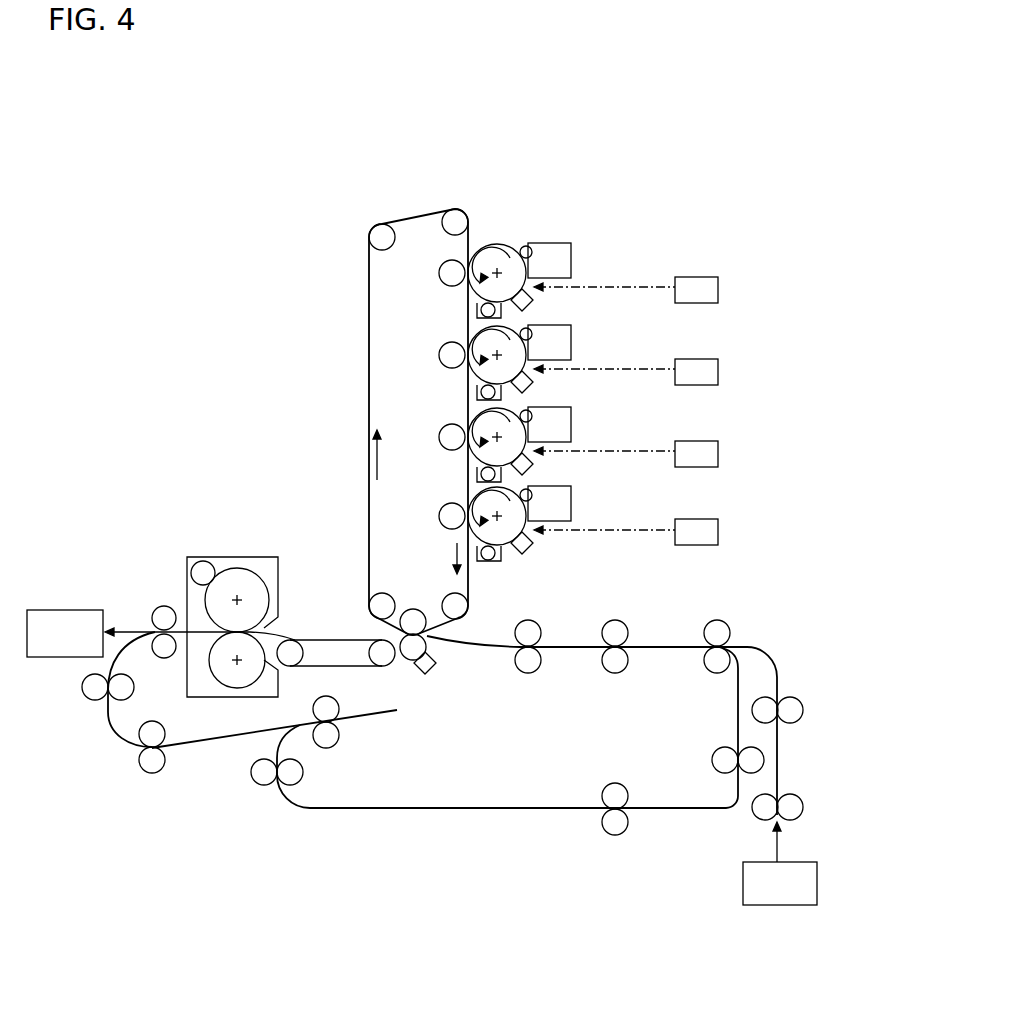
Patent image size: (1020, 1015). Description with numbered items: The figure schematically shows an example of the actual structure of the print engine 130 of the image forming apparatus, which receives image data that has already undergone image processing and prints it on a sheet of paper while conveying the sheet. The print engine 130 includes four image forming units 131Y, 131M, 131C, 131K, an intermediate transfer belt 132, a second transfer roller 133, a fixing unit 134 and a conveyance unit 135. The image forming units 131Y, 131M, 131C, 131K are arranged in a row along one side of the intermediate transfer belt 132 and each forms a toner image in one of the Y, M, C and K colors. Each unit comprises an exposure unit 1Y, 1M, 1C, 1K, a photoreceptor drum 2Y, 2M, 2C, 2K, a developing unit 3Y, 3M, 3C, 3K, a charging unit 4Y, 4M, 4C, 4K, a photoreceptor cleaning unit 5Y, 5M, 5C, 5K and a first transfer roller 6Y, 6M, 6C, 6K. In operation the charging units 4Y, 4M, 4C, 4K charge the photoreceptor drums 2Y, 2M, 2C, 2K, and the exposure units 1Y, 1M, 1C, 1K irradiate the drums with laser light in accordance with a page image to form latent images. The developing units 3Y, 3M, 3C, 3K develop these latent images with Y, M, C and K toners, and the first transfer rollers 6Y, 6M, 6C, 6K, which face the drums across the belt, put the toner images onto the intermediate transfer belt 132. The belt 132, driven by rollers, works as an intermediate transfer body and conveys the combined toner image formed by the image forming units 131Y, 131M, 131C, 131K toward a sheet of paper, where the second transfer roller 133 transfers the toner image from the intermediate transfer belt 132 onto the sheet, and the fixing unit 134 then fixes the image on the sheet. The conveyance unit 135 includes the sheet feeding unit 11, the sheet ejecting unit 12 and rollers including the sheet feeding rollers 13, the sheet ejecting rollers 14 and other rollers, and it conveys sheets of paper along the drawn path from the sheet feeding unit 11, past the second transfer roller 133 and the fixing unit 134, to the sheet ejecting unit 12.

The print engine 130 is at (660, 87).
The image forming unit 131Y is at (743, 229).
The image forming unit 131M is at (741, 325).
The image forming unit 131C is at (741, 412).
The image forming unit 131K is at (749, 491).
The exposure unit 1Y is at (692, 278).
The exposure unit 1M is at (688, 358).
The exposure unit 1C is at (688, 440).
The exposure unit 1K is at (688, 520).
The photoreceptor drum 2Y is at (492, 243).
The photoreceptor drum 2M is at (478, 333).
The photoreceptor drum 2C is at (477, 413).
The photoreceptor drum 2K is at (477, 490).
The developing unit 3Y is at (537, 244).
The developing unit 3M is at (572, 353).
The developing unit 3C is at (571, 430).
The developing unit 3K is at (571, 510).
The charging unit 4Y is at (535, 305).
The charging unit 4M is at (535, 385).
The charging unit 4C is at (535, 467).
The charging unit 4K is at (535, 547).
The photoreceptor cleaning unit 5Y is at (502, 317).
The photoreceptor cleaning unit 5M is at (501, 399).
The photoreceptor cleaning unit 5C is at (501, 480).
The photoreceptor cleaning unit 5K is at (501, 560).
The first transfer roller 6Y is at (456, 266).
The first transfer roller 6M is at (442, 352).
The first transfer roller 6C is at (443, 428).
The first transfer roller 6K is at (443, 510).
The intermediate transfer belt 132 is at (368, 316).
The second transfer roller 133 is at (429, 651).
The fixing unit 134 is at (262, 557).
The conveyance unit 135 is at (478, 870).
The sheet ejecting unit 12 is at (63, 610).
The sheet ejecting rollers 14 is at (151, 628).
The sheet feeding rollers 13 is at (778, 818).
The sheet feeding unit 11 is at (778, 907).